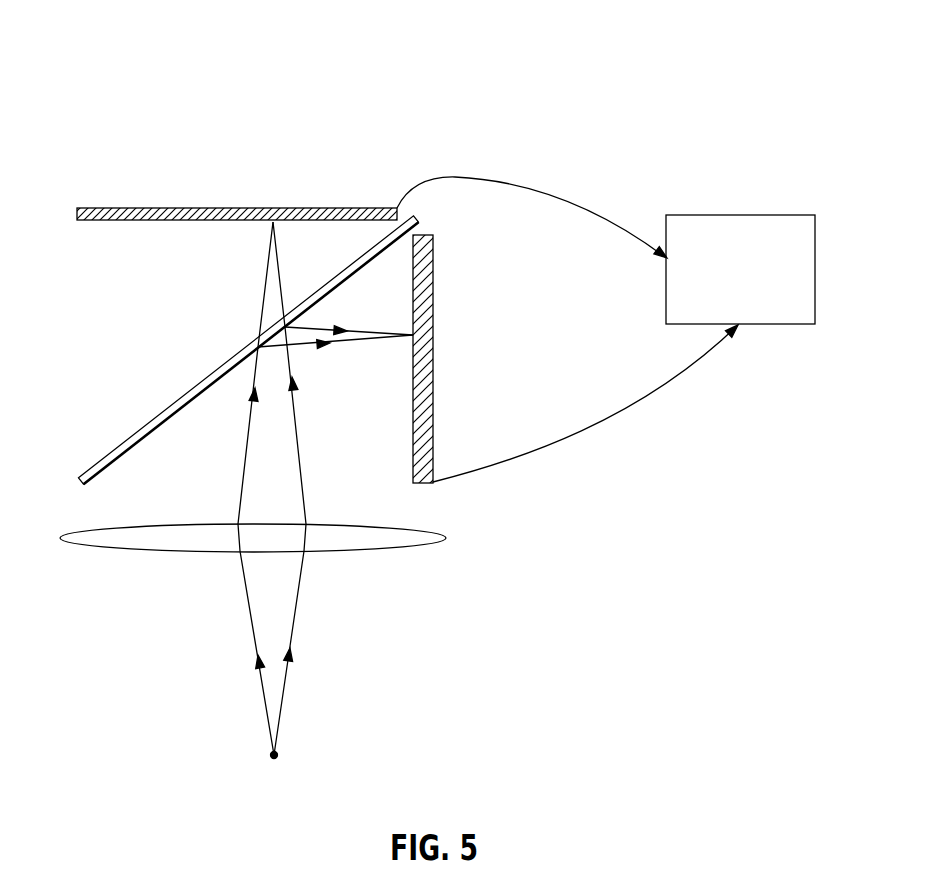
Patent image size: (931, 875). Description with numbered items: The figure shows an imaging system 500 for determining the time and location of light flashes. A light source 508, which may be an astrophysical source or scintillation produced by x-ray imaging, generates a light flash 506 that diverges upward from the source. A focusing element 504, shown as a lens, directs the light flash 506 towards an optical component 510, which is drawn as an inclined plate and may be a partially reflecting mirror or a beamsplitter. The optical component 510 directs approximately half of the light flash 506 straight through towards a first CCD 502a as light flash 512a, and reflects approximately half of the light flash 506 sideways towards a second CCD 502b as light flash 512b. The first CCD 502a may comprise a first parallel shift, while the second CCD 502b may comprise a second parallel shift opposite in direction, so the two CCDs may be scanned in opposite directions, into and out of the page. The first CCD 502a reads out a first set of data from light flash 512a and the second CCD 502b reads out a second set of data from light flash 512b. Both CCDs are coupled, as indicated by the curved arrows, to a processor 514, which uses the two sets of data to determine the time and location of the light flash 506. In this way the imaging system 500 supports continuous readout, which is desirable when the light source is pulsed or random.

The imaging system 500 is at (147, 88).
The first CCD 502a is at (202, 207).
The second CCD 502b is at (433, 377).
The focusing element 504 is at (442, 535).
The light flash 506 is at (295, 625).
The light source 508 is at (278, 755).
The optical component 510 is at (83, 470).
The light flash 512a is at (270, 266).
The light flash 512b is at (307, 347).
The processor 514 is at (722, 282).